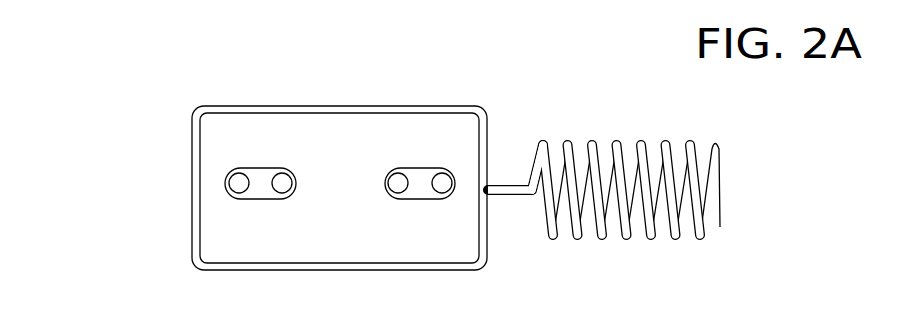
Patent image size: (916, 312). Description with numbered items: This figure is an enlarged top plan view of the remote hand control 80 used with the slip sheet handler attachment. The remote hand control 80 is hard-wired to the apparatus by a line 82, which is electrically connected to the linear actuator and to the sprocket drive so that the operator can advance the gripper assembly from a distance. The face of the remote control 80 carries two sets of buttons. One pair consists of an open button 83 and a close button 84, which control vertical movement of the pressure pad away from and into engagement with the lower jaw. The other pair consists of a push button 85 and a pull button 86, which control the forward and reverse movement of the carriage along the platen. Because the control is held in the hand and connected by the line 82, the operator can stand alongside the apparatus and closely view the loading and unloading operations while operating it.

The remote hand control 80 is at (342, 106).
The line 82 is at (617, 142).
The open button 83 is at (447, 174).
The close button 84 is at (397, 174).
The push button 85 is at (280, 173).
The pull button 86 is at (238, 173).